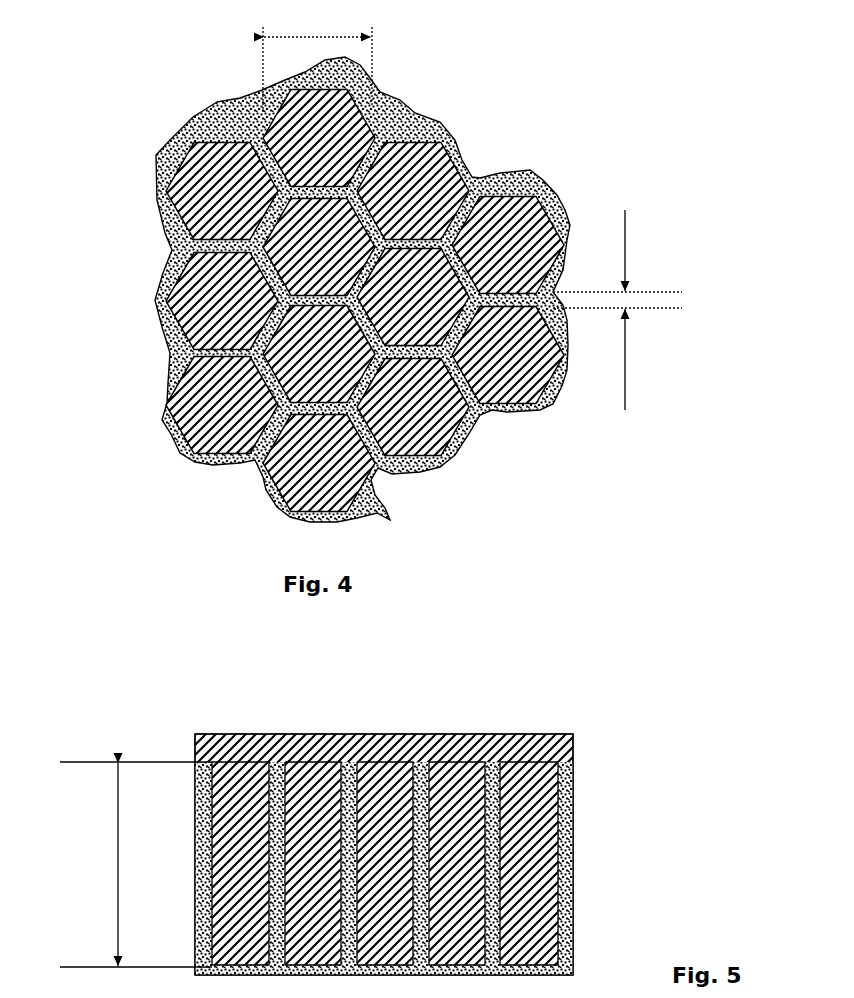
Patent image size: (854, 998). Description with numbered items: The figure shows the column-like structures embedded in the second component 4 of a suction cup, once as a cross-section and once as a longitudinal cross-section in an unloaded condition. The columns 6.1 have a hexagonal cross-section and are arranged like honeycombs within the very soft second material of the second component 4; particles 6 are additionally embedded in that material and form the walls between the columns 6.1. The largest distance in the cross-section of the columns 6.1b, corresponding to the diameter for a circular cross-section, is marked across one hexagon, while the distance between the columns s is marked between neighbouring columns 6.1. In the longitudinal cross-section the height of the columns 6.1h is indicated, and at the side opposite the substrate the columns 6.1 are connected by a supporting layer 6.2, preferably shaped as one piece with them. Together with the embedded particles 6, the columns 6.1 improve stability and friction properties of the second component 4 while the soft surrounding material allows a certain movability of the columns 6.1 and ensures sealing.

In FIG. 4, the second component 4 is at (370, 286).
In FIG. 5, the second component 4 is at (430, 838).
In FIG. 4, the particles 6 is at (530, 170).
In FIG. 5, the particles 6 is at (573, 872).
In FIG. 4, the columns 6.1 is at (460, 180).
In FIG. 5, the columns 6.1 is at (462, 822).
In FIG. 5, the supporting layer 6.2 is at (503, 735).
In FIG. 4, the largest distance in the cross-section of the columns 6.1b is at (317, 62).
In FIG. 5, the height of the columns 6.1h is at (136, 864).
In FIG. 4, the distance between the columns s is at (617, 310).